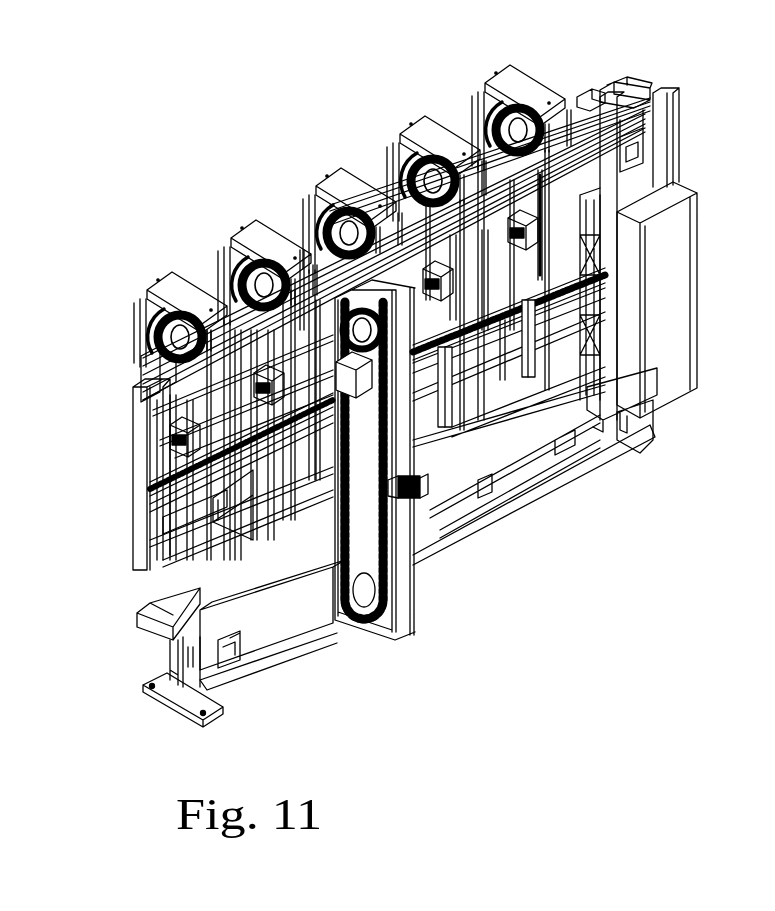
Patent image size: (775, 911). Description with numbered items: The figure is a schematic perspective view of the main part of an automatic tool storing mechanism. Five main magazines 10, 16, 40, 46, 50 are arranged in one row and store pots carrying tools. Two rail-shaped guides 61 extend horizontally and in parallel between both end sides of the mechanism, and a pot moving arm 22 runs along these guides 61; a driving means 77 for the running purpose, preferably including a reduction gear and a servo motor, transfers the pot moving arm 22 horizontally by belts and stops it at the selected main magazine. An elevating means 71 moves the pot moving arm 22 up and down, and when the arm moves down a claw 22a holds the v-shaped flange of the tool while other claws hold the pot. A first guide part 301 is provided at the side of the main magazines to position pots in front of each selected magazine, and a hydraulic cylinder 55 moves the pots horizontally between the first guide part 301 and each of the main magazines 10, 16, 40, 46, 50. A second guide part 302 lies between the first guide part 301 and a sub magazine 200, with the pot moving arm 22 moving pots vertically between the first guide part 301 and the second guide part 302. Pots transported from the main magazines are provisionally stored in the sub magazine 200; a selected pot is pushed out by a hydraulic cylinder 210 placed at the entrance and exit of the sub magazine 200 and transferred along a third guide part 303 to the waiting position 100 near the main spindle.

The main magazine 10 is at (163, 280).
The main magazine 16 is at (252, 238).
The pot moving arm 22 is at (240, 320).
The claw 22a is at (335, 396).
The main magazine 40 is at (332, 188).
The main magazine 46 is at (420, 130).
The main magazine 50 is at (500, 78).
The hydraulic cylinder 55 is at (173, 457).
The guide 61 is at (586, 108).
The elevating means 71 is at (307, 320).
The driving means 77 is at (635, 158).
The waiting position 100 is at (428, 490).
The sub magazine 200 is at (365, 295).
The hydraulic cylinder 210 is at (402, 625).
The first guide part 301 is at (328, 598).
The second guide part 302 is at (515, 425).
The third guide part 303 is at (460, 338).